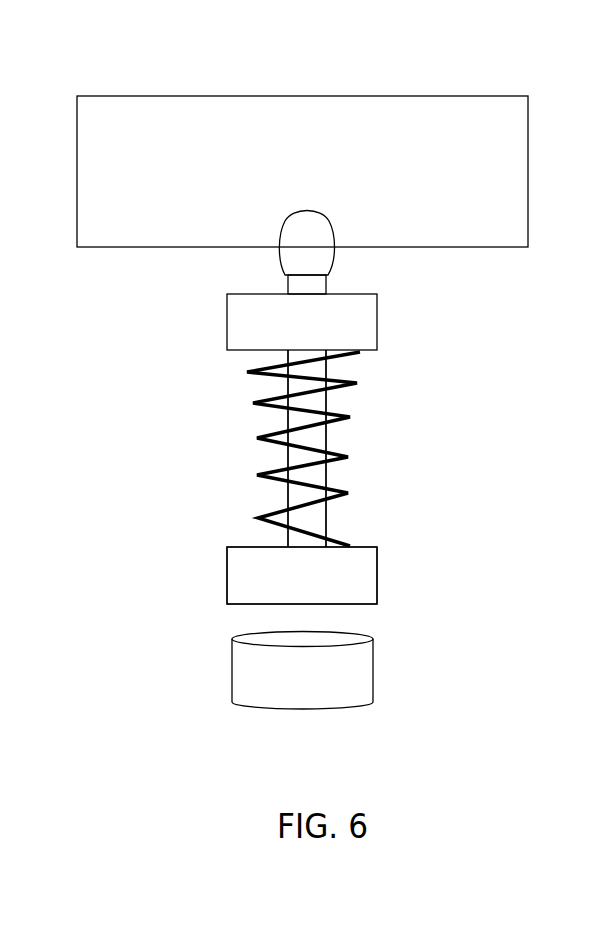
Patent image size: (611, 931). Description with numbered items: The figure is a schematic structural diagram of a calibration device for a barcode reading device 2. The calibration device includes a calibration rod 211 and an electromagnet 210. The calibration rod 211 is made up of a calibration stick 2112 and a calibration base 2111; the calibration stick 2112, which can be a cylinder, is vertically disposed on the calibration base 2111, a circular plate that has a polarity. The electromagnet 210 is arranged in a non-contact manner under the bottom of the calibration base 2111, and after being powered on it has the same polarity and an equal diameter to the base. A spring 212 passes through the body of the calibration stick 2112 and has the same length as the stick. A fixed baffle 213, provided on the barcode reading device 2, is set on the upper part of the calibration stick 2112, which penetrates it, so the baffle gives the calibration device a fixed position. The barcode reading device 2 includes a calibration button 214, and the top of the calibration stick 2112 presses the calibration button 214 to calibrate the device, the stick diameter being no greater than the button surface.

The barcode reading device 2 is at (419, 97).
The electromagnet 210 is at (372, 670).
The calibration rod 211 is at (288, 497).
The calibration base 2111 is at (377, 549).
The calibration stick 2112 is at (283, 470).
The spring 212 is at (402, 445).
The fixed baffle 213 is at (227, 297).
The calibration button 214 is at (334, 247).